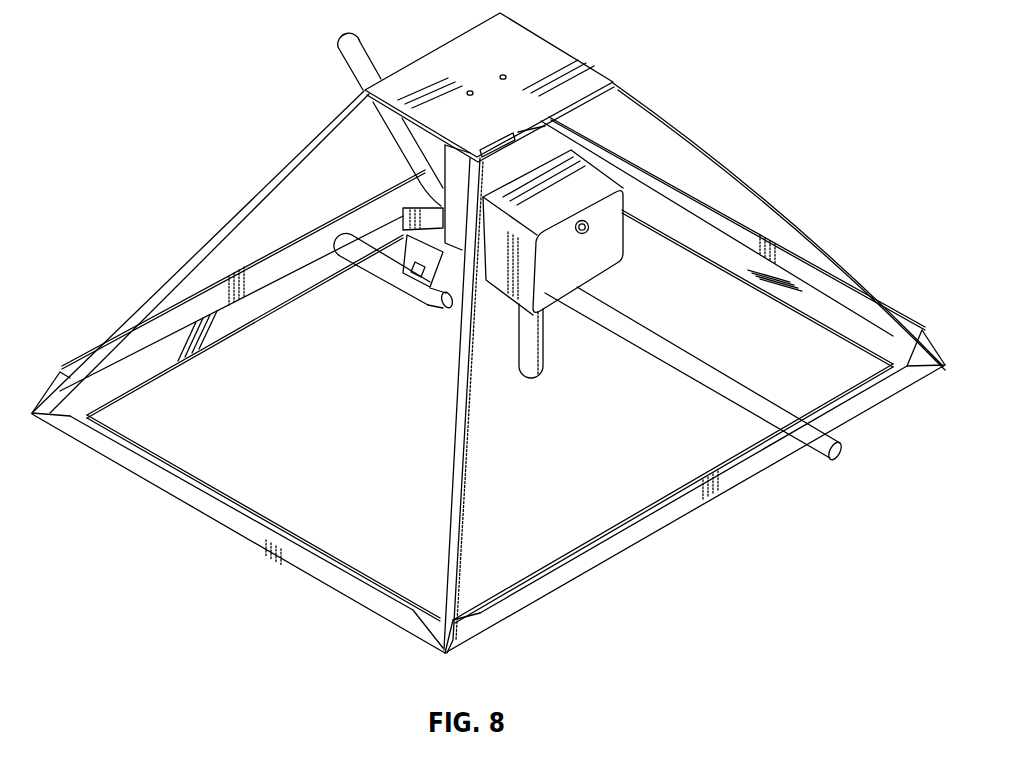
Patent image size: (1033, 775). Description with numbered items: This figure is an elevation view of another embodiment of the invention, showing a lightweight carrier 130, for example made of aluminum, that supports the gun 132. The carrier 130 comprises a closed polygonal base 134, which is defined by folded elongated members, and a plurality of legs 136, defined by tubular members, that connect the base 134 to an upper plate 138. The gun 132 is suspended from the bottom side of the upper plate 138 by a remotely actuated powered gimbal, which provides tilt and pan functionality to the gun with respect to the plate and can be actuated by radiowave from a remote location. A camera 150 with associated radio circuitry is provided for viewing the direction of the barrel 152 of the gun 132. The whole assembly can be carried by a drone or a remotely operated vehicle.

The carrier 130 is at (248, 191).
The gun 132 is at (405, 296).
The closed polygonal base 134 is at (616, 556).
The legs 136 is at (464, 437).
The upper plate 138 is at (530, 47).
The camera 150 is at (590, 233).
The barrel 152 is at (654, 352).